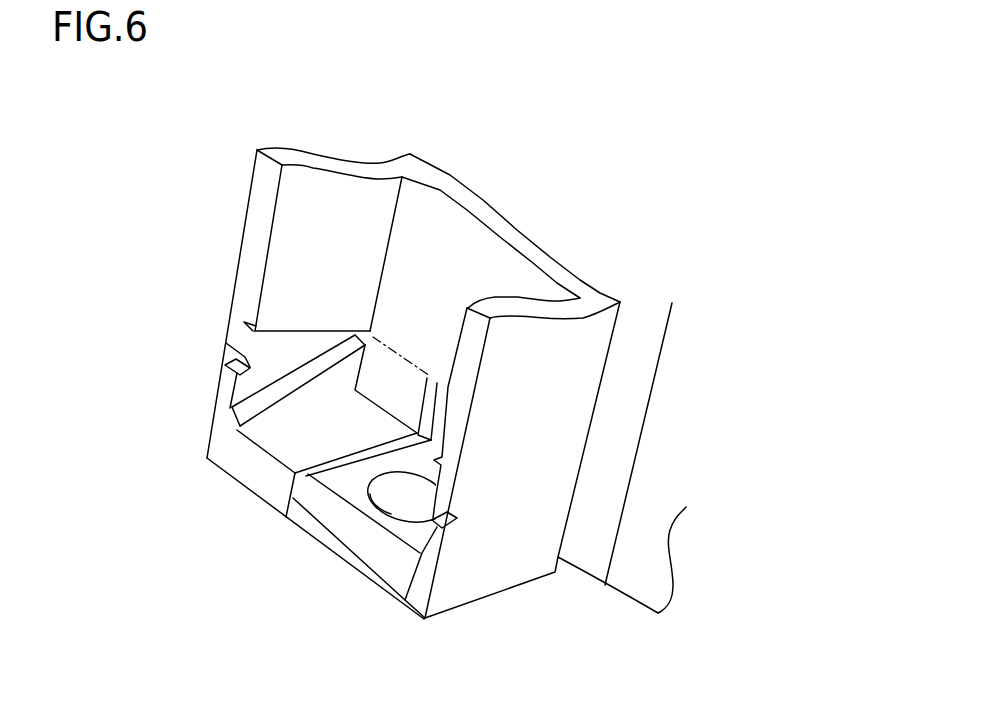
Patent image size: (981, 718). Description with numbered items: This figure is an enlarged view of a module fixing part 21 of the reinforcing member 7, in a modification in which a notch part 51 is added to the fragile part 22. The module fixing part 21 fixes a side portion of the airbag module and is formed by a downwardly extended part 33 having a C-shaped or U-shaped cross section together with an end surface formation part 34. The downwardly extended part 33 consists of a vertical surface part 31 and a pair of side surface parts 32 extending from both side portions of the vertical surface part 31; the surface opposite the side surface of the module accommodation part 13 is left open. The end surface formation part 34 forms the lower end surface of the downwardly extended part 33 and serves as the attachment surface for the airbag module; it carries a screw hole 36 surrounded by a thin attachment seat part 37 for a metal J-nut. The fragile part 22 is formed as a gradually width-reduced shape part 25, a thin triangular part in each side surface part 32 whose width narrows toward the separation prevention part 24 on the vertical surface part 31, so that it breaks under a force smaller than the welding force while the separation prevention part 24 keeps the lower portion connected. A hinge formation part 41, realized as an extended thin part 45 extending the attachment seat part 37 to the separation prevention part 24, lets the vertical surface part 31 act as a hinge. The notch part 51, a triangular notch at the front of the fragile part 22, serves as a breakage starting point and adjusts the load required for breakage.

The reinforcing member 7 is at (702, 228).
The module accommodation part 13 is at (628, 575).
The module fixing part 21 is at (183, 552).
The fragile part 22 is at (258, 341).
The separation prevention part 24 is at (396, 342).
The gradually width-reduced shape part 25 is at (221, 380).
The vertical surface part 31 is at (492, 190).
The side surface part 32 is at (365, 133).
The downwardly extended part 33 is at (672, 150).
The end surface formation part 34 is at (232, 462).
The screw hole 36 is at (368, 497).
The attachment seat part 37 is at (388, 532).
The hinge formation part 41 is at (444, 376).
The extended thin part 45 is at (260, 287).
The notch part 51 is at (227, 365).